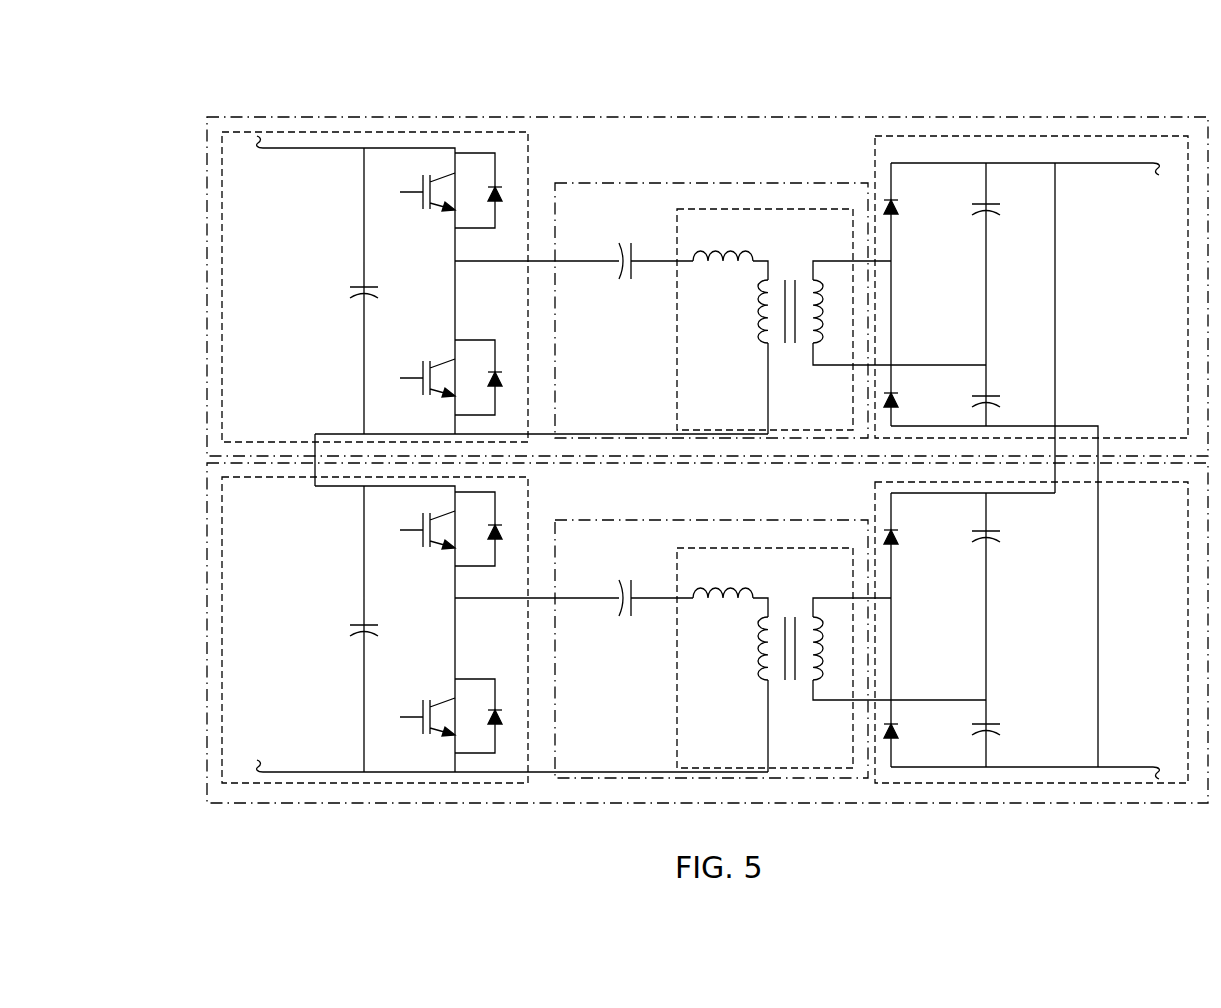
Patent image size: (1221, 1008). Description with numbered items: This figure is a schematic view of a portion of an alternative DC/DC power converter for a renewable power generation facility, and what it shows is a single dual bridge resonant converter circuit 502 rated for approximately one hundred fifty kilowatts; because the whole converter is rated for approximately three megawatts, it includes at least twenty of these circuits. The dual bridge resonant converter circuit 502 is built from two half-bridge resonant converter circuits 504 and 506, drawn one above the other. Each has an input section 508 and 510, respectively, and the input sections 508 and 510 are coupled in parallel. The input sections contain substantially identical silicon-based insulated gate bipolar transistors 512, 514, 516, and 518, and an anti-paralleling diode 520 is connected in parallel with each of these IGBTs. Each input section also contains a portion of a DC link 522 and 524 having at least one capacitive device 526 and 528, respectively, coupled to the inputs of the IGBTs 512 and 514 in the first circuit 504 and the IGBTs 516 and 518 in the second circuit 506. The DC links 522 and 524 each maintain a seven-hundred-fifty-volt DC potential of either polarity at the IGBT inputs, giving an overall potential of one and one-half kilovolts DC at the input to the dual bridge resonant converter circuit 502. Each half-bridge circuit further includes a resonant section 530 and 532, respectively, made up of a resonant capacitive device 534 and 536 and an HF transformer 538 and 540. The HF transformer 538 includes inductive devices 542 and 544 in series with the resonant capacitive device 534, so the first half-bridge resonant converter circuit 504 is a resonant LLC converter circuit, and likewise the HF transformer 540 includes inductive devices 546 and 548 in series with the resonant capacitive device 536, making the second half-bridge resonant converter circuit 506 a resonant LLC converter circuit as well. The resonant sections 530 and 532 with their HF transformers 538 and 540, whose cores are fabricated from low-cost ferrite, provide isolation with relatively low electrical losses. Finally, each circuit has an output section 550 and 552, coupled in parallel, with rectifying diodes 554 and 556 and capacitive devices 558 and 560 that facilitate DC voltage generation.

The dual bridge resonant converter circuit 502 is at (334, 102).
The first half-bridge resonant converter circuit 504 is at (497, 115).
The second half-bridge resonant converter circuit 506 is at (402, 805).
The input section 508 is at (383, 130).
The input section 510 is at (292, 785).
The insulated gate bipolar transistor 512 is at (425, 205).
The insulated gate bipolar transistor 514 is at (428, 362).
The insulated gate bipolar transistor 516 is at (426, 543).
The insulated gate bipolar transistor 518 is at (430, 705).
The anti-paralleling diode 520 is at (497, 190).
The DC link 522 is at (302, 259).
The DC link 524 is at (308, 594).
The capacitive device 526 is at (350, 300).
The capacitive device 528 is at (350, 636).
The resonant section 530 is at (697, 183).
The resonant section 532 is at (617, 780).
The resonant capacitive device 534 is at (622, 242).
The resonant capacitive device 536 is at (622, 582).
The HF transformer 538 is at (762, 209).
The HF transformer 540 is at (805, 768).
The inductive device 542 is at (713, 270).
The inductive device 544 is at (755, 303).
The inductive device 546 is at (713, 607).
The inductive device 548 is at (755, 640).
The output section 550 is at (1085, 136).
The output section 552 is at (1043, 783).
The rectifying diode 554 is at (899, 209).
The rectifying diode 556 is at (898, 538).
The capacitive device 558 is at (993, 207).
The capacitive device 560 is at (993, 536).